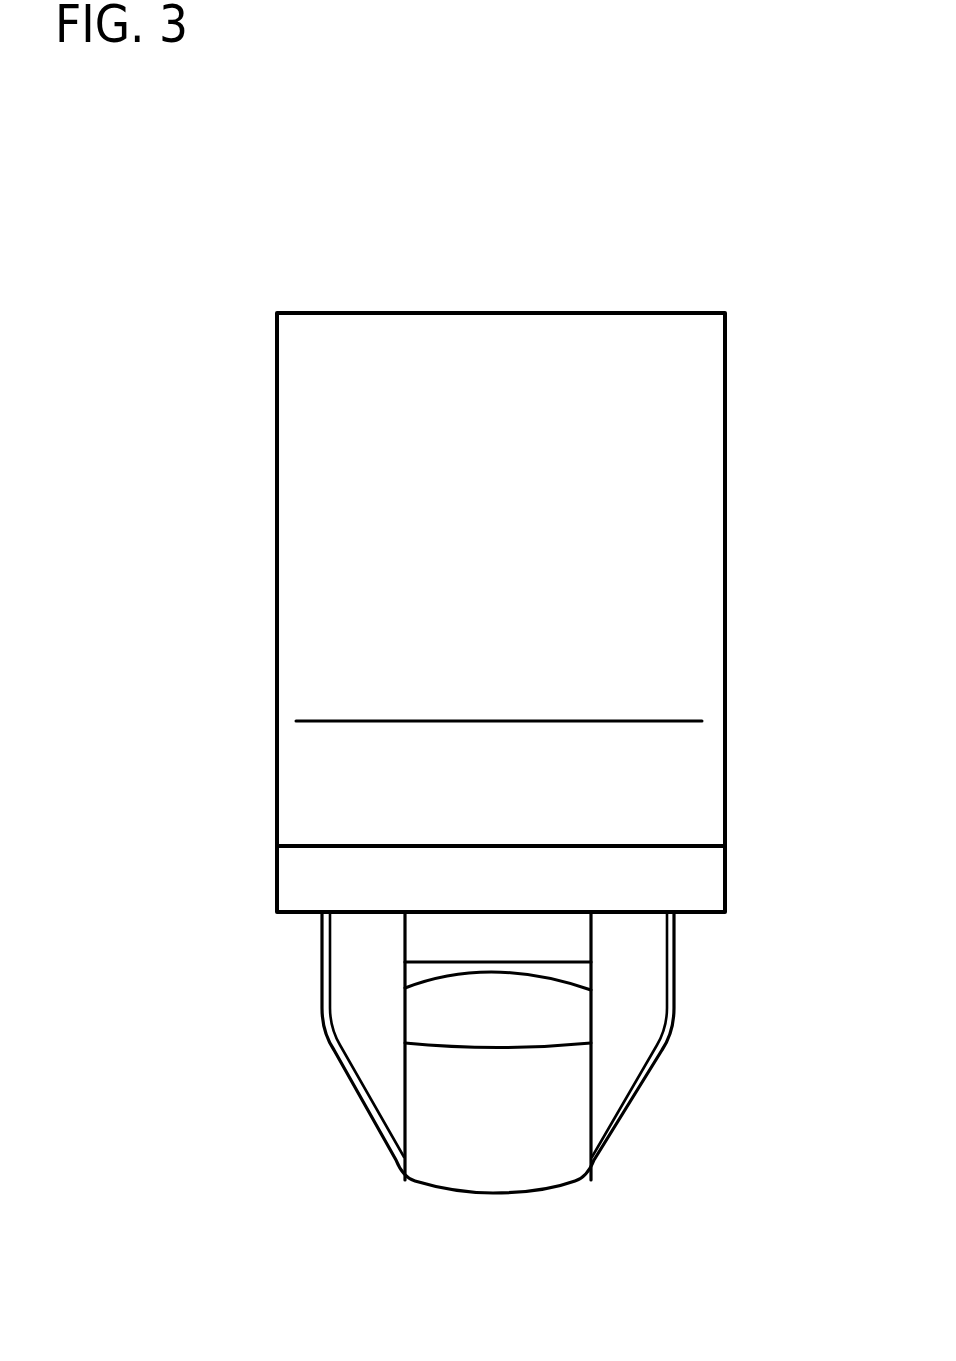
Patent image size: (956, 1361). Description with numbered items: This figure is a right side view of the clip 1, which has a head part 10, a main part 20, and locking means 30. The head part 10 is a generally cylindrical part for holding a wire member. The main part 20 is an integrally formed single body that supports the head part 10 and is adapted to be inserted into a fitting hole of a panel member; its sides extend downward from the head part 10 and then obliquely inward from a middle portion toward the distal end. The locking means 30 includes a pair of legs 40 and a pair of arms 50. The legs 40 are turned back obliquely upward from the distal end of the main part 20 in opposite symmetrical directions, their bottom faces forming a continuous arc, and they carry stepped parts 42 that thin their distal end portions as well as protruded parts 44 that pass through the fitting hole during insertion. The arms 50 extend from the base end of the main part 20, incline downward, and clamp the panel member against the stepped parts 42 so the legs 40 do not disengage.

The clip 1 is at (234, 218).
The head part 10 is at (465, 333).
The main part 20 is at (633, 983).
The locking means 30 is at (148, 858).
The leg 40 is at (443, 1077).
The stepped part 42 is at (527, 962).
The protruded part 44 is at (482, 968).
The arm 50 is at (323, 780).